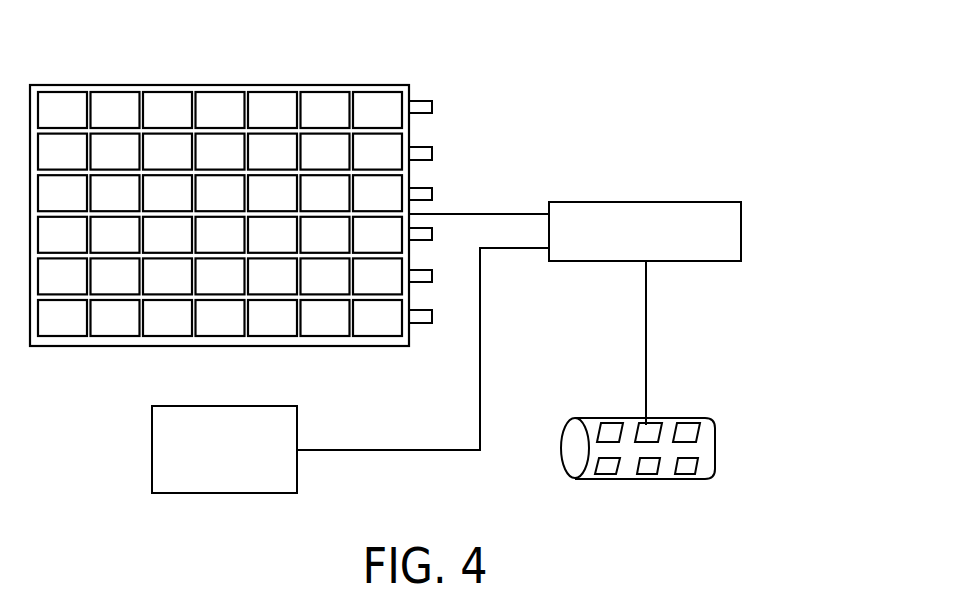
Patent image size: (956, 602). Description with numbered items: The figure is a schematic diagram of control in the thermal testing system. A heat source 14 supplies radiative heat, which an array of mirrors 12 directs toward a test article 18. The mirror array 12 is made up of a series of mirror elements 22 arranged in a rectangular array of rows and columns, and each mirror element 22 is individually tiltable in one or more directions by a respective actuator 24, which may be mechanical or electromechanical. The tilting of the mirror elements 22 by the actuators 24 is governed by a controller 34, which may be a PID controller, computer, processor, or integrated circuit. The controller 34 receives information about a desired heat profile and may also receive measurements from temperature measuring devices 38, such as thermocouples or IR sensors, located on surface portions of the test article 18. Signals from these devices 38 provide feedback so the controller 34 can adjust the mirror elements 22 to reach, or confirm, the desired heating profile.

The array of mirrors 12 is at (105, 85).
The mirror elements 22 is at (222, 108).
The actuators 24 is at (420, 155).
The controller 34 is at (741, 228).
The heat source 14 is at (152, 449).
The test article 18 is at (715, 447).
The temperature measuring devices 38 is at (648, 470).